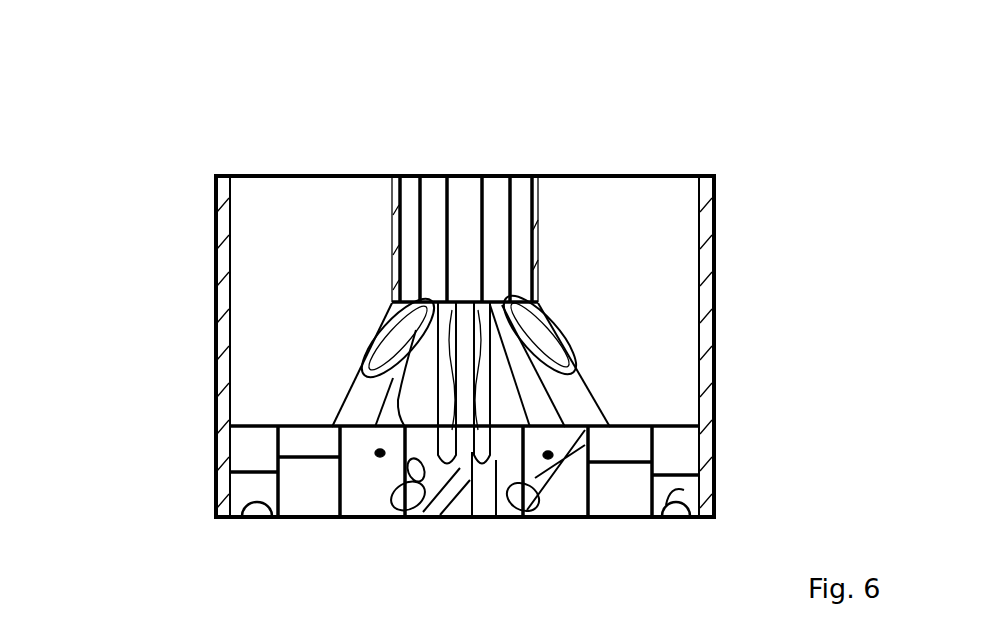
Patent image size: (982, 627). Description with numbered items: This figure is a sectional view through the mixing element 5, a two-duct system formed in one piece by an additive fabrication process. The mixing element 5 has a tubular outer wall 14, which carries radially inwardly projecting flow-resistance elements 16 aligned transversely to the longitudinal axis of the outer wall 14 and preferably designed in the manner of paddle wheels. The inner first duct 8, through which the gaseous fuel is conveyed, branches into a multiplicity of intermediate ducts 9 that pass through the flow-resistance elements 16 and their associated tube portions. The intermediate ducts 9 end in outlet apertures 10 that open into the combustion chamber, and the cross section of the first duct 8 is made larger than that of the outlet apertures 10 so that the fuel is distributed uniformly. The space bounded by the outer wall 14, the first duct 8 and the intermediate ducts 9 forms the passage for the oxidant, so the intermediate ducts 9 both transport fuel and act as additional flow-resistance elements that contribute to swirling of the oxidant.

The mixing element 5 is at (114, 134).
The first duct 8 is at (473, 212).
The intermediate ducts 9 is at (352, 399).
The outlet apertures 10 is at (250, 510).
The outer wall 14 is at (212, 267).
The flow-resistance elements 16 is at (278, 424).